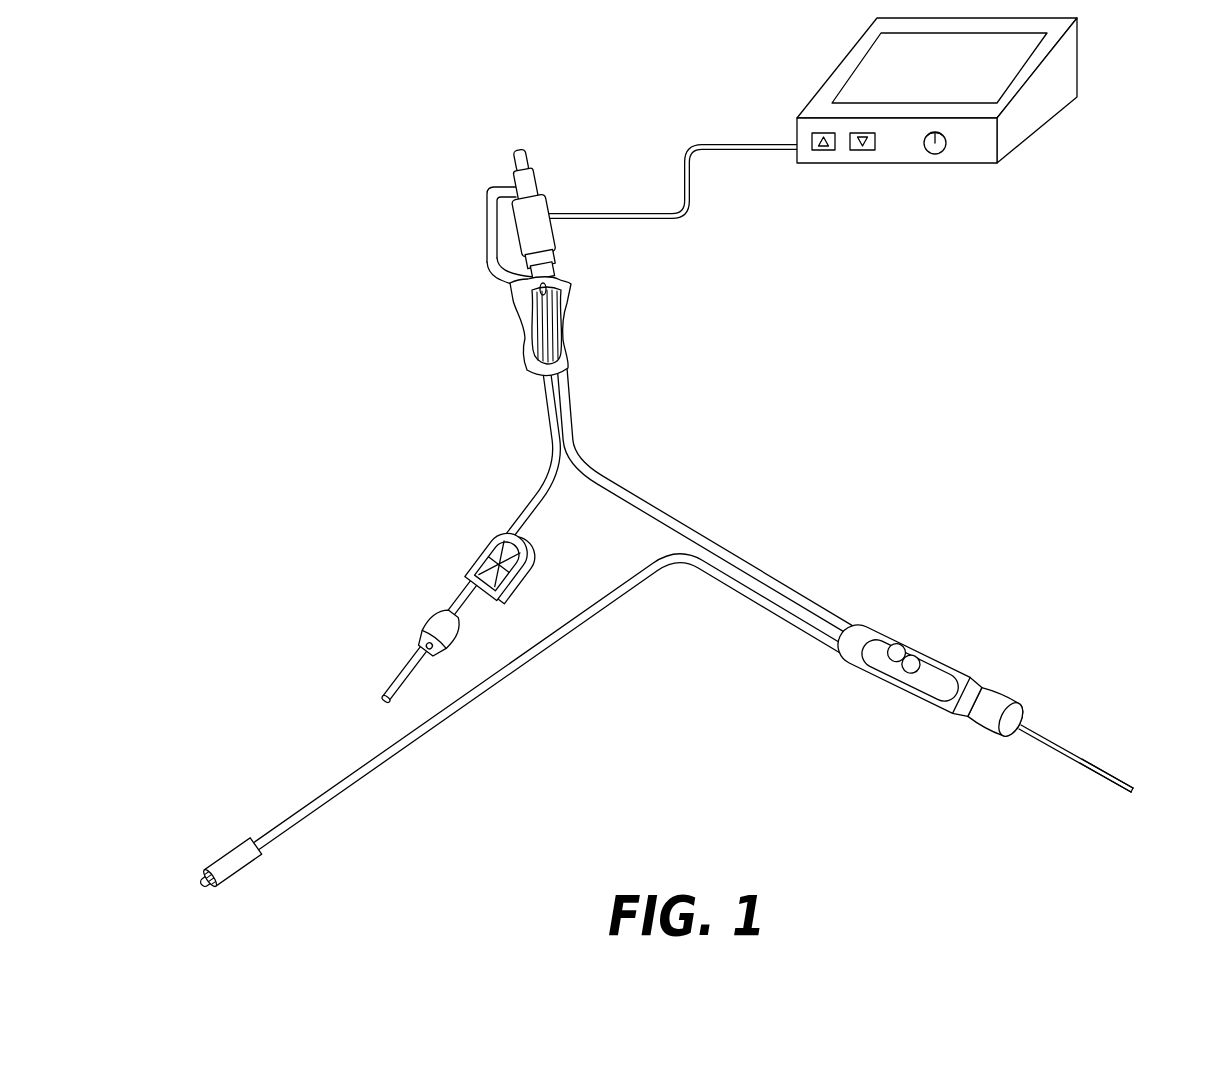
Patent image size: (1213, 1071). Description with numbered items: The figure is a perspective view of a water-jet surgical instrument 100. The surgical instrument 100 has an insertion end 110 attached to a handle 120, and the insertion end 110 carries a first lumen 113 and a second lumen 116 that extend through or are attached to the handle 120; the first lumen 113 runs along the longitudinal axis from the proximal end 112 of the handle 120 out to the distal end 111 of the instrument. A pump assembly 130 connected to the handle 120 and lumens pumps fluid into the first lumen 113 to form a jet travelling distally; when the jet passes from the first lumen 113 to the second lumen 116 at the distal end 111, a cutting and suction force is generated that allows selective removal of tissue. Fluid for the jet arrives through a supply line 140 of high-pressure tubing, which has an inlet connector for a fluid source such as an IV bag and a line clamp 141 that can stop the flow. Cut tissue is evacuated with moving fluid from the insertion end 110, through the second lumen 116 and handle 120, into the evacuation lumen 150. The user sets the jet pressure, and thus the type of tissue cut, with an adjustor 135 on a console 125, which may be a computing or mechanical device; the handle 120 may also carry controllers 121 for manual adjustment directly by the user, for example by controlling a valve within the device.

The surgical instrument 100 is at (706, 453).
The insertion end 110 is at (1009, 702).
The distal end 111 is at (1117, 788).
The proximal end 112 is at (936, 669).
The first lumen 113 is at (1072, 763).
The second lumen 116 is at (1076, 771).
The handle 120 is at (916, 659).
The controllers 121 is at (908, 670).
The console 125 is at (987, 134).
The pump assembly 130 is at (571, 327).
The adjustor 135 is at (870, 152).
The supply line 140 is at (537, 513).
The line clamp 141 is at (455, 562).
The evacuation lumen 150 is at (500, 682).